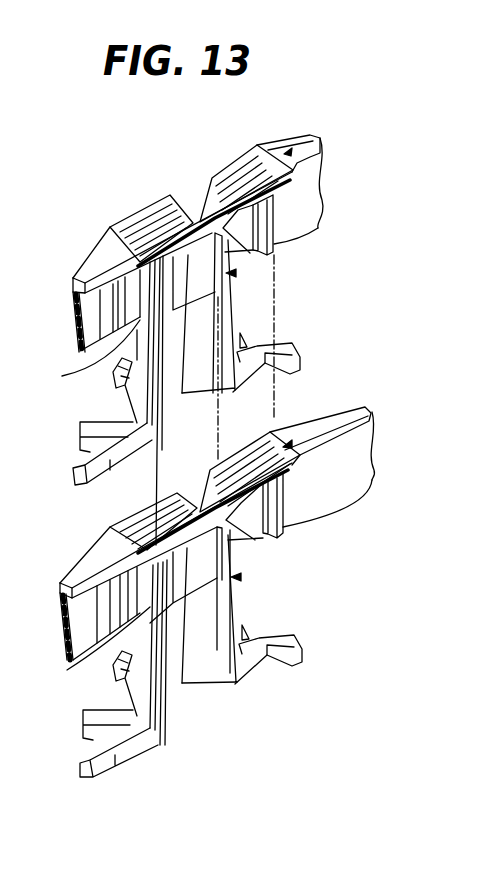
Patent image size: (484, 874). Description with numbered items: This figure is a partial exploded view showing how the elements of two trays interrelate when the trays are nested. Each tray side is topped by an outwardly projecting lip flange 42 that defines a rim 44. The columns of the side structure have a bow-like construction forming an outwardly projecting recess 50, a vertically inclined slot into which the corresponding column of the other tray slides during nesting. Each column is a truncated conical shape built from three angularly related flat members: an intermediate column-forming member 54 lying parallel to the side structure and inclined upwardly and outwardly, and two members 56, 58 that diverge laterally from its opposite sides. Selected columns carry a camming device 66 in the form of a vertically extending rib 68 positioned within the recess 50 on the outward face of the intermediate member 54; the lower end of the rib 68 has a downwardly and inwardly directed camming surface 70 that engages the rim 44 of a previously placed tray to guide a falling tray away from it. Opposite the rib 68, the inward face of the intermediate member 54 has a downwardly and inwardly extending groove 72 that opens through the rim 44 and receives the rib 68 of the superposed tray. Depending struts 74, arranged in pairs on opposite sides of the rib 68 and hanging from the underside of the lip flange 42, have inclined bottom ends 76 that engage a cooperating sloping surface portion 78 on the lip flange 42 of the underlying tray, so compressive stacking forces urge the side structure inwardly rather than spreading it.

The lip flange 42 is at (320, 142).
The rim 44 is at (293, 148).
The recess 50 is at (157, 407).
The intermediate column-forming member 54 is at (175, 358).
The column-forming member 56 is at (228, 461).
The column-forming member 58 is at (127, 395).
The camming device 66 is at (236, 273).
The rib 68 is at (170, 469).
The camming surface 70 is at (216, 313).
The groove 72 is at (186, 190).
The strut 74 is at (150, 284).
The bottom end of strut 76 is at (68, 370).
The sloping surface portion 78 is at (112, 240).